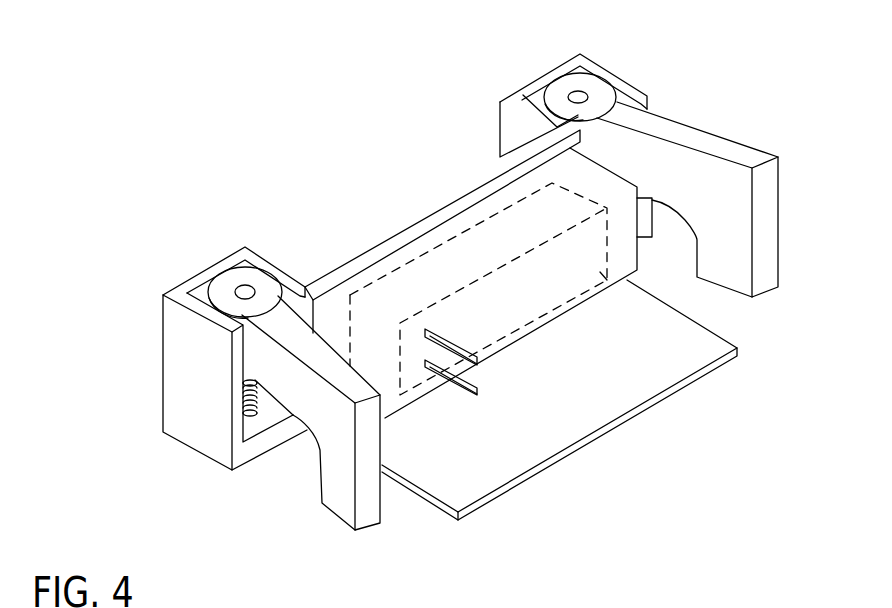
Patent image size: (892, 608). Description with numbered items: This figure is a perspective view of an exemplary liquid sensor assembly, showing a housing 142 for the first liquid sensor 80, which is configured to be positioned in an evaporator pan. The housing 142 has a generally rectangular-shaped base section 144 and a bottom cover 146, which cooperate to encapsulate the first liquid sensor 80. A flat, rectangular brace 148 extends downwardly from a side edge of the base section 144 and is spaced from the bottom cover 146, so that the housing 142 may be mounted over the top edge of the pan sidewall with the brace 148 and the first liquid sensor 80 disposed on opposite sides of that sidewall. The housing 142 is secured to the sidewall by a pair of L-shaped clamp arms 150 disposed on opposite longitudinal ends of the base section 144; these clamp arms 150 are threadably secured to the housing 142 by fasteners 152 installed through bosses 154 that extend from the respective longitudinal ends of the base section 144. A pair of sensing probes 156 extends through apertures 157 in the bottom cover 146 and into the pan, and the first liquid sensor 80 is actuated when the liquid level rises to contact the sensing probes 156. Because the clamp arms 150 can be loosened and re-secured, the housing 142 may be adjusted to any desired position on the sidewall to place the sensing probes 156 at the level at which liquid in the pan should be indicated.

The housing 142 is at (270, 190).
The base section 144 is at (460, 175).
The bottom cover 146 is at (508, 253).
The brace 148 is at (607, 427).
The clamp arms 150 is at (345, 520).
The fasteners 152 is at (255, 402).
The bosses 154 is at (162, 328).
The sensing probes 156 is at (437, 378).
The apertures 157 is at (425, 331).
The first liquid sensor 80 is at (593, 307).